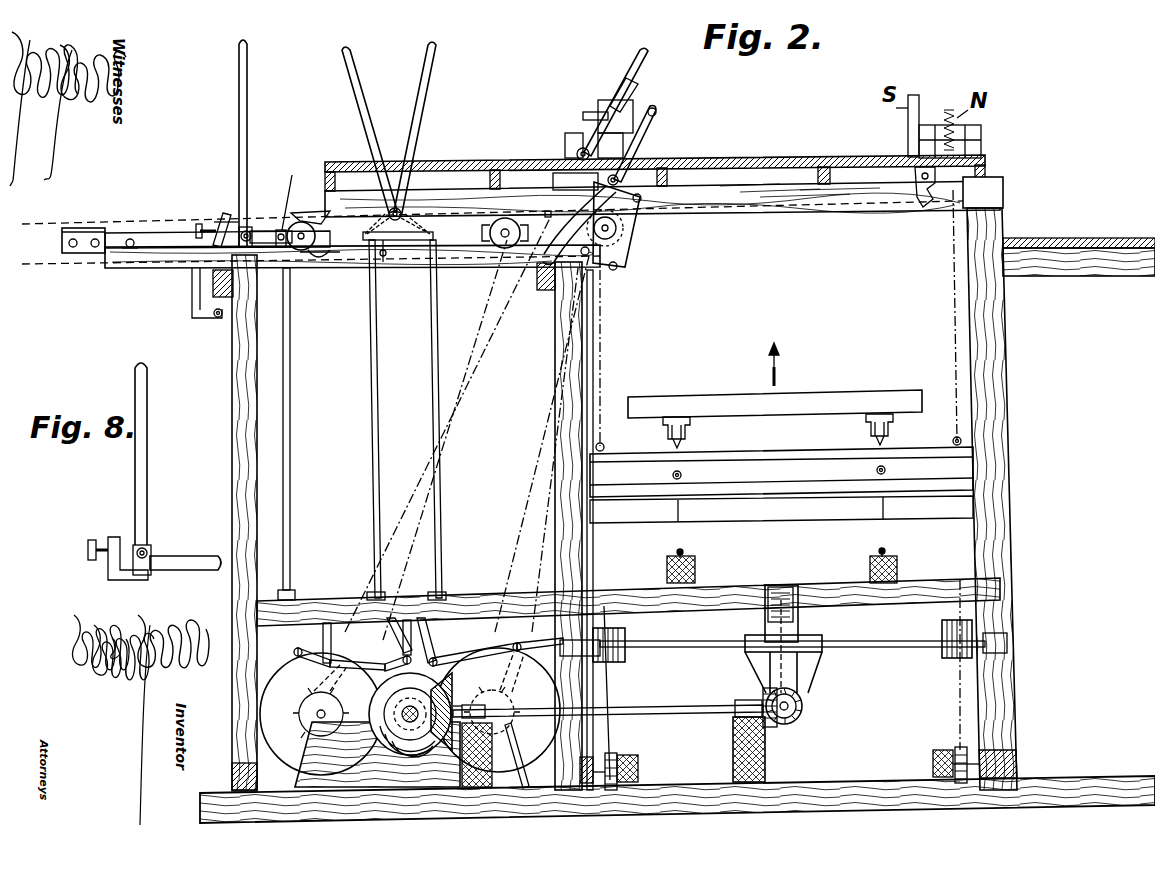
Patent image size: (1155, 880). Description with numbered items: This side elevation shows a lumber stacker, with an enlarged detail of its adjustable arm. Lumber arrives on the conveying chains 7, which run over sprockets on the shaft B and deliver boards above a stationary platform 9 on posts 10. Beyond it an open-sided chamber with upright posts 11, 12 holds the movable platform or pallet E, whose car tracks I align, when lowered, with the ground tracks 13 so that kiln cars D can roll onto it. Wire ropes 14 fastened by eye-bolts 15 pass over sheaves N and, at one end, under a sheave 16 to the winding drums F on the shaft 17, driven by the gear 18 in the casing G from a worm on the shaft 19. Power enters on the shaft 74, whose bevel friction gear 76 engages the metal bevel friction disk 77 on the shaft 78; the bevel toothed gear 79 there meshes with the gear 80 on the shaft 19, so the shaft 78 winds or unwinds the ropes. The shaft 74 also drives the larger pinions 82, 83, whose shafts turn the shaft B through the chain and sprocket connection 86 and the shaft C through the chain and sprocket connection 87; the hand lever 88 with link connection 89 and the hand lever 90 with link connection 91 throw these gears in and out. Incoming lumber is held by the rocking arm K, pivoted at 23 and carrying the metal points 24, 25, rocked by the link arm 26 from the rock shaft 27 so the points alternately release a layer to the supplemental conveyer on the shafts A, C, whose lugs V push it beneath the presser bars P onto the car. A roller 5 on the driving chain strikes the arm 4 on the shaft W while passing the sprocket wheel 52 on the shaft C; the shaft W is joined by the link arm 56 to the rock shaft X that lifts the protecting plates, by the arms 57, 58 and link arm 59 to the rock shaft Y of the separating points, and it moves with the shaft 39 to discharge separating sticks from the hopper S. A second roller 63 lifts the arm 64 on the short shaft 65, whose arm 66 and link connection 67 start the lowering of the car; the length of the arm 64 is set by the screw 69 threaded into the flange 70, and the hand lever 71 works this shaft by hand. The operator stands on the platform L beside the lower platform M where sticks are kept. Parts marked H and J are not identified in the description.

In FIG. 2, the conveying chains 7 is at (506, 231).
In FIG. 2, the metal point 24 is at (70, 232).
In FIG. 2, the rocking arm K is at (118, 235).
In FIG. 2, the pivot 23 is at (128, 250).
In FIG. 2, the stationary platform 9 is at (162, 270).
In FIG. 2, the link arm 26 is at (192, 300).
In FIG. 2, the rock shaft 27 is at (215, 320).
In FIG. 2, the link connection 67 is at (291, 358).
In FIG. 2, the hand lever 71 is at (253, 103).
In FIG. 8, the hand lever 71 is at (148, 416).
In FIG. 2, the short shaft 65 is at (253, 228).
In FIG. 8, the short shaft 65 is at (150, 553).
In FIG. 2, the flange 70 is at (226, 213).
In FIG. 8, the flange 70 is at (112, 537).
In FIG. 2, the screw 69 is at (206, 228).
In FIG. 8, the screw 69 is at (92, 561).
In FIG. 2, the arm 64 is at (322, 212).
In FIG. 8, the arm 64 is at (200, 570).
In FIG. 2, the metal point 25 is at (290, 190).
In FIG. 2, the arm 66 is at (279, 249).
In FIG. 2, the shaft A is at (301, 251).
In FIG. 2, the lugs V is at (325, 254).
In FIG. 2, the hand lever 88 is at (358, 88).
In FIG. 2, the hand lever 90 is at (432, 92).
In FIG. 2, the roller 5 is at (385, 260).
In FIG. 2, the link connection 89 is at (372, 412).
In FIG. 2, the link connection 91 is at (440, 473).
In FIG. 2, the chain and sprocket connection 86 is at (366, 548).
In FIG. 2, the chain and sprocket connection 87 is at (520, 530).
In FIG. 2, the roller 63 is at (545, 213).
In FIG. 2, the shaft B is at (507, 249).
In FIG. 2, the rock shaft X is at (540, 292).
In FIG. 2, the shaft W is at (553, 183).
In FIG. 2, the arm 4 is at (580, 198).
In FIG. 2, the hopper S is at (636, 122).
In FIG. 2, the sheaves N is at (585, 122).
In FIG. 2, the rock shaft Y is at (577, 152).
In FIG. 2, the arm 58 is at (644, 62).
In FIG. 2, the link arm 59 is at (648, 110).
In FIG. 2, the arm 57 is at (640, 148).
In FIG. 2, the shaft C is at (625, 230).
In FIG. 2, the link arm 56 is at (628, 240).
In FIG. 2, the sprocket wheel 52 is at (618, 266).
In FIG. 2, the shaft 39 is at (935, 176).
In FIG. 2, the lower platform M is at (1070, 240).
In FIG. 2, the presser bars P is at (777, 212).
In FIG. 2, the platform L is at (470, 162).
In FIG. 2, the posts 10 is at (232, 468).
In FIG. 2, the upright supporting post 11 is at (555, 386).
In FIG. 2, the upright supporting post 12 is at (1008, 490).
In FIG. 2, the wire ropes 14 is at (953, 346).
In FIG. 2, the eye-bolts 15 is at (962, 440).
In FIG. 2, the kiln cars D is at (775, 380).
In FIG. 2, the car tracks I is at (665, 444).
In FIG. 2, the platform or pallet E is at (781, 485).
In FIG. 2, the tracks 13 is at (677, 551).
In FIG. 2, the block H is at (697, 574).
In FIG. 2, the larger pinion 83 is at (290, 672).
In FIG. 2, the larger pinion 82 is at (485, 660).
In FIG. 2, the shaft 74 is at (377, 754).
In FIG. 2, the bevel friction gear 76 is at (404, 753).
In FIG. 2, the metal bevel friction disk 77 is at (448, 752).
In FIG. 2, the wheel J is at (491, 726).
In FIG. 2, the shaft 78 is at (655, 708).
In FIG. 2, the shaft 19 is at (795, 722).
In FIG. 2, the bevel toothed gear 79 is at (760, 700).
In FIG. 2, the gear 80 is at (804, 708).
In FIG. 2, the casing G is at (808, 676).
In FIG. 2, the gear 18 is at (768, 610).
In FIG. 2, the shaft 17 is at (890, 633).
In FIG. 2, the winding drums F is at (628, 658).
In FIG. 2, the sheave 16 is at (628, 757).